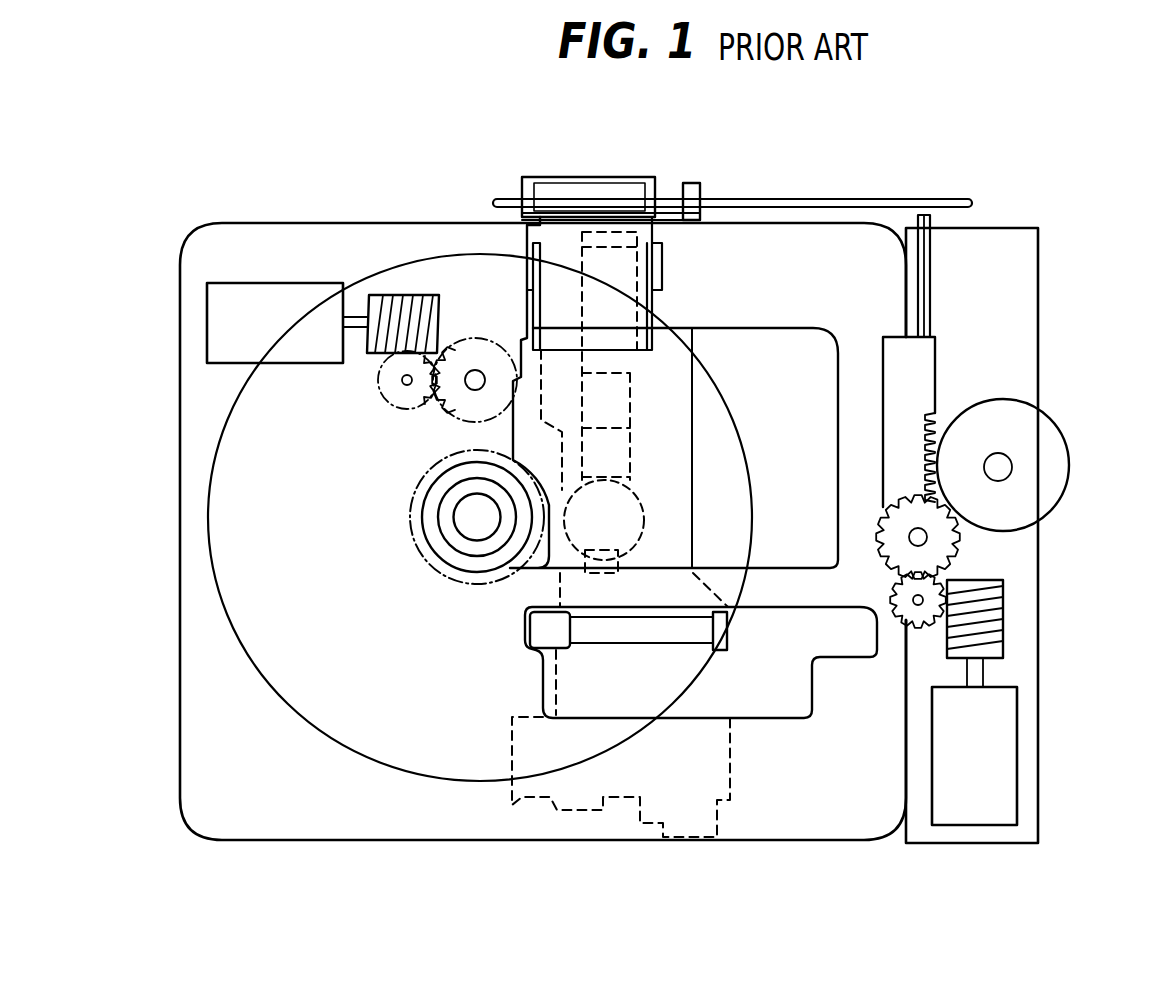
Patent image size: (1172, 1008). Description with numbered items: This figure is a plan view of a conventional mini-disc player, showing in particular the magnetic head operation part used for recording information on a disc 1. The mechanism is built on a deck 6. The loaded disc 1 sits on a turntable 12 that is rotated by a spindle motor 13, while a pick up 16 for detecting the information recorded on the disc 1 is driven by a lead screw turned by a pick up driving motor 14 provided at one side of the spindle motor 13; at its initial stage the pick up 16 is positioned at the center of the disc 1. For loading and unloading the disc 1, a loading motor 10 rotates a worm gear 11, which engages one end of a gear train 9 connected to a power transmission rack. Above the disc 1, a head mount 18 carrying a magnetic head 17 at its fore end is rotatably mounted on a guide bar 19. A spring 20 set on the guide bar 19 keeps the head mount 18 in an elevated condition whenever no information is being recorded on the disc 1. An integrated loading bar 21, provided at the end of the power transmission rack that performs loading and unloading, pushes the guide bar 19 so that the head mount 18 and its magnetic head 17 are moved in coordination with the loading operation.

The disc 1 is at (308, 728).
The deck 6 is at (435, 830).
The gear train 9 is at (962, 548).
The loading motor 10 is at (1005, 776).
The worm gear 11 is at (990, 637).
The turntable 12 is at (442, 540).
The spindle motor 13 is at (408, 510).
The pick up driving motor 14 is at (247, 295).
The pick up 16 is at (728, 793).
The magnetic head 17 is at (640, 495).
The head mount 18 is at (660, 272).
The guide bar 19 is at (850, 200).
The spring 20 is at (690, 185).
The integrated loading bar 21 is at (925, 255).